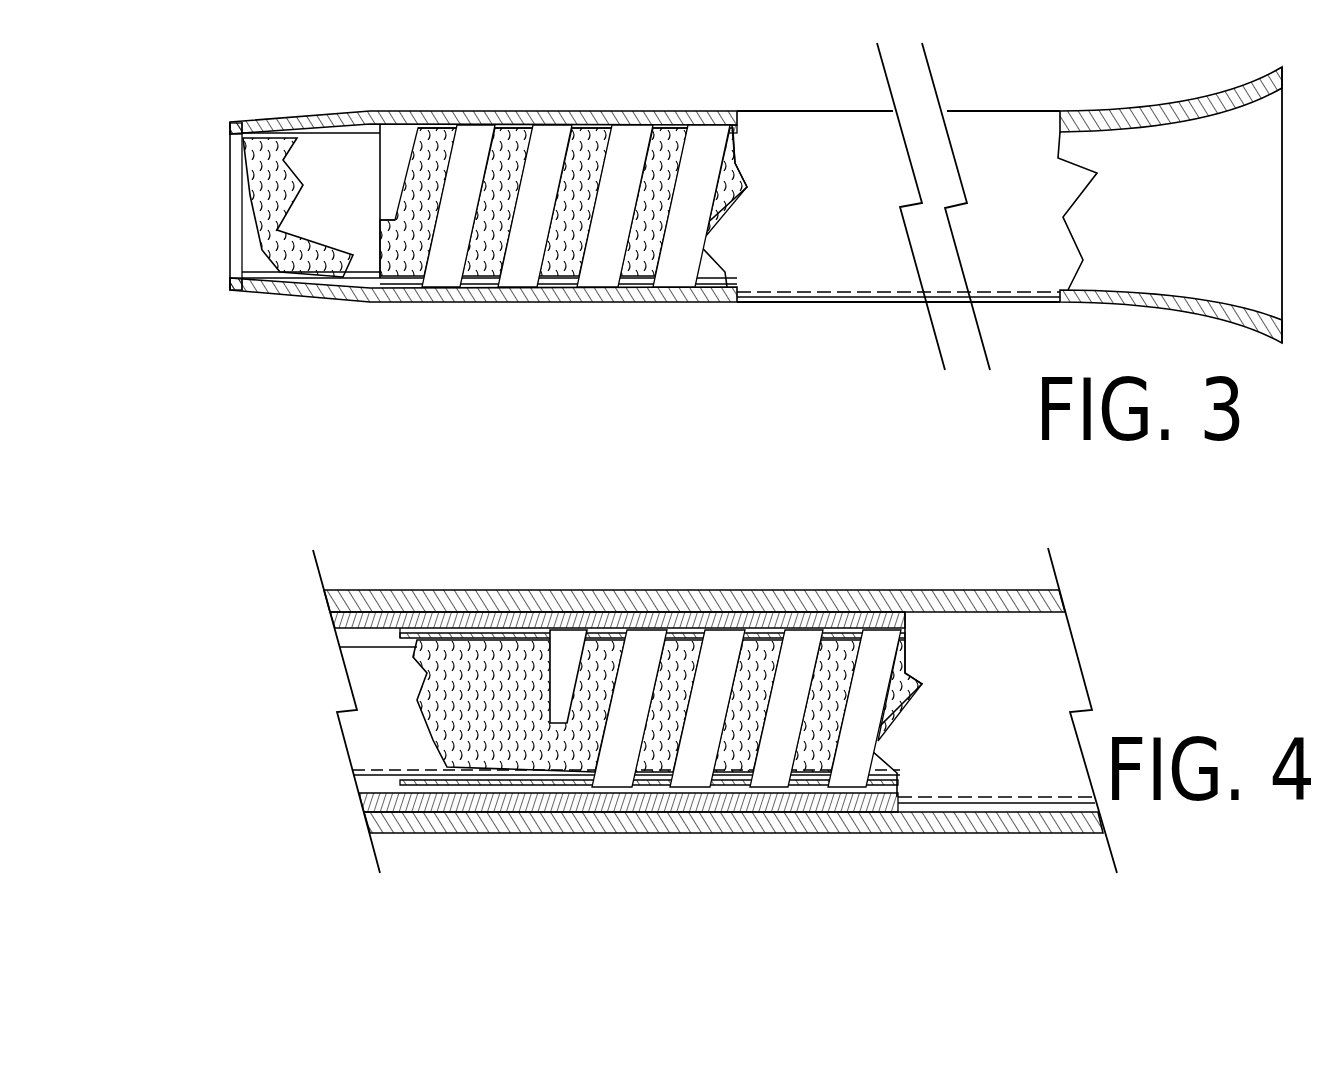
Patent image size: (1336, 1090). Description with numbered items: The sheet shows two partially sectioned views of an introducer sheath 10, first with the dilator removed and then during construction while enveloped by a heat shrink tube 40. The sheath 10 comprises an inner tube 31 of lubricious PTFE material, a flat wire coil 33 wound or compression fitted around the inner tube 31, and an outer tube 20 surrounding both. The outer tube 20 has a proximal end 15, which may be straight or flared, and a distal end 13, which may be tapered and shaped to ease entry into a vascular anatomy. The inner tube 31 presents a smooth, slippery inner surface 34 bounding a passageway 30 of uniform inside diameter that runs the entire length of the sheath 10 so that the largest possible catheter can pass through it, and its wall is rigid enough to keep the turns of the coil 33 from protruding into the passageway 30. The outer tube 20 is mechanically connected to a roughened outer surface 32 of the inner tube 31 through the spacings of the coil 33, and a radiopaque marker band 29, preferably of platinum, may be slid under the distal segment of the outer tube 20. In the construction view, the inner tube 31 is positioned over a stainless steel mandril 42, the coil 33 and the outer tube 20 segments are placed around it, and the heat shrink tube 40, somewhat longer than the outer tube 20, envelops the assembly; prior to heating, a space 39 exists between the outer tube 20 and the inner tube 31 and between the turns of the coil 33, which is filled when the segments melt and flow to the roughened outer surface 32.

In FIG. 3, the introducer sheath 10 is at (612, 93).
In FIG. 3, the distal end 13 is at (248, 104).
In FIG. 3, the proximal end 15 is at (1160, 83).
In FIG. 3, the outer tube 20 is at (778, 252).
In FIG. 4, the outer tube 20 is at (483, 622).
In FIG. 3, the radiopaque marker band 29 is at (363, 132).
In FIG. 4, the radiopaque marker band 29 is at (537, 637).
In FIG. 3, the passageway 30 is at (245, 246).
In FIG. 3, the inner tube 31 is at (230, 280).
In FIG. 4, the inner tube 31 is at (397, 780).
In FIG. 3, the roughened outer surface 32 is at (398, 282).
In FIG. 4, the roughened outer surface 32 is at (830, 725).
In FIG. 3, the flat wire coil 33 is at (523, 243).
In FIG. 4, the flat wire coil 33 is at (803, 640).
In FIG. 3, the inner surface 34 is at (230, 173).
In FIG. 4, the space 39 is at (605, 637).
In FIG. 4, the heat shrink tube 40 is at (517, 598).
In FIG. 4, the mandril 42 is at (368, 743).